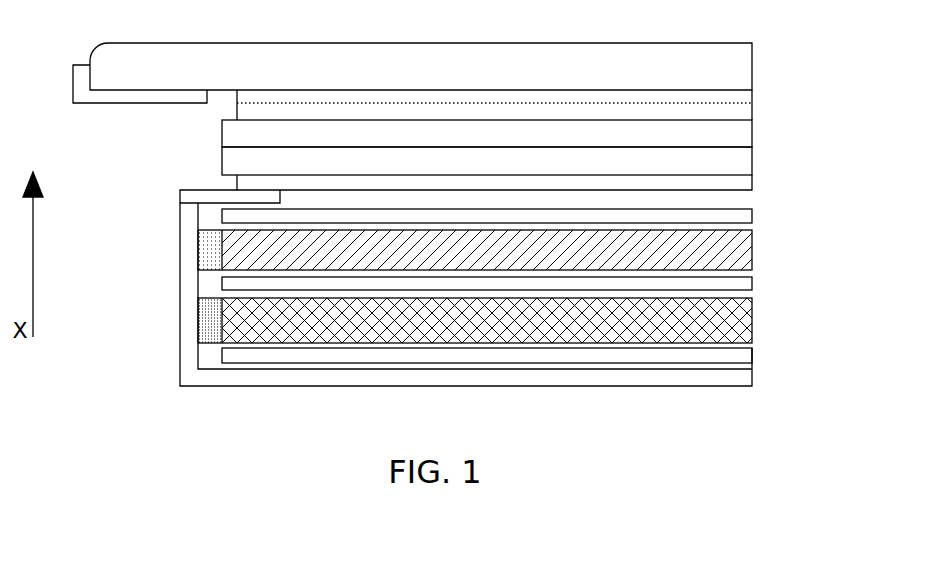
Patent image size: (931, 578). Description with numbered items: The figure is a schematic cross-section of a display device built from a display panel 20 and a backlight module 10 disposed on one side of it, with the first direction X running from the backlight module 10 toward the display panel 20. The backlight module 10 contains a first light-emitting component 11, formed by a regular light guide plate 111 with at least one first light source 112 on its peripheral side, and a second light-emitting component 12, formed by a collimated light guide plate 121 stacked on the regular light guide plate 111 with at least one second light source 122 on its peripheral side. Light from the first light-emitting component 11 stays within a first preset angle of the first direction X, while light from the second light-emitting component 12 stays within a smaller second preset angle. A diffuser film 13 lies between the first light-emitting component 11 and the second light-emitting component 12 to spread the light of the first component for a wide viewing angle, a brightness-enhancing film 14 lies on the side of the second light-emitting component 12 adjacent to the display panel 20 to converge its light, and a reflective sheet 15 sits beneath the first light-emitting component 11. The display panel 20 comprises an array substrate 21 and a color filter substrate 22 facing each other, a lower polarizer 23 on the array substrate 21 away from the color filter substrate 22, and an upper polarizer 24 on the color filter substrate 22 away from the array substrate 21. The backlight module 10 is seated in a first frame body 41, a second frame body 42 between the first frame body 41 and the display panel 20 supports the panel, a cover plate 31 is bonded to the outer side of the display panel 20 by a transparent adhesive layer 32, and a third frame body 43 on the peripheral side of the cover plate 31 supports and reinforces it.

The backlight module 10 is at (437, 316).
The first light-emitting component 11 is at (432, 324).
The regular light guide plate 111 is at (235, 330).
The first light source 112 is at (210, 314).
The second light-emitting component 12 is at (426, 253).
The collimated light guide plate 121 is at (233, 255).
The second light source 122 is at (210, 240).
The diffuser film 13 is at (608, 283).
The brightness-enhancing film 14 is at (537, 215).
The reflective sheet 15 is at (715, 357).
The display panel 20 is at (543, 139).
The array substrate 21 is at (752, 158).
The color filter substrate 22 is at (752, 133).
The lower polarizer 23 is at (528, 176).
The upper polarizer 24 is at (752, 112).
The cover plate 31 is at (752, 65).
The transparent adhesive layer 32 is at (752, 92).
The first frame body 41 is at (752, 377).
The second frame body 42 is at (187, 198).
The third frame body 43 is at (160, 97).